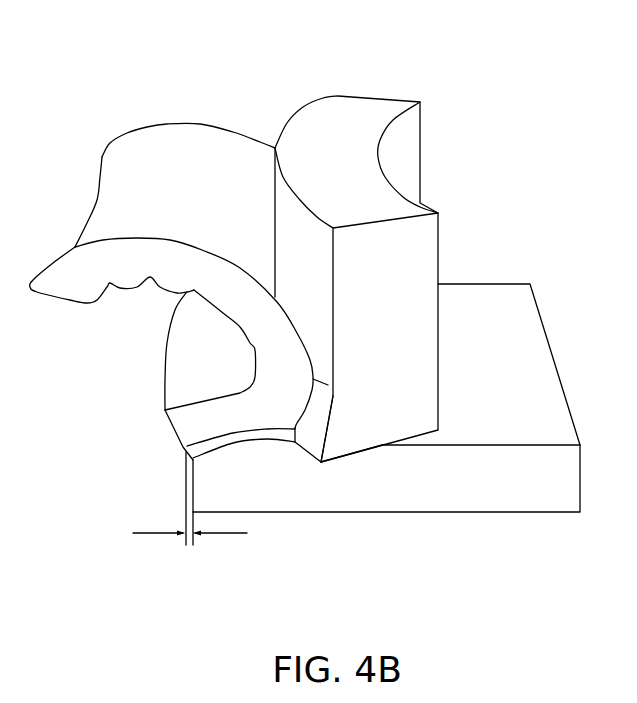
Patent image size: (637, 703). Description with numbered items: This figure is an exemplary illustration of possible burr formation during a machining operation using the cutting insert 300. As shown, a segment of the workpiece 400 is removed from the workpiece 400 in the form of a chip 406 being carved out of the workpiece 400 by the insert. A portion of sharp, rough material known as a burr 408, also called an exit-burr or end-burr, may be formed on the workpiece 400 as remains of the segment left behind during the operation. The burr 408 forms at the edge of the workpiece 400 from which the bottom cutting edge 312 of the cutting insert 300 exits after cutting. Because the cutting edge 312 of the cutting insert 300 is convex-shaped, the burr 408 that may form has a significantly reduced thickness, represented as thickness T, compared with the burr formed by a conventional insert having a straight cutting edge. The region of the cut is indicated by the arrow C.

The cutting insert 300 is at (373, 107).
The bottom cutting edge 312 is at (313, 462).
The workpiece 400 is at (487, 534).
The chip 406 is at (178, 153).
The burr 408 is at (177, 453).
The thickness T is at (160, 532).
The cutting region C is at (306, 80).